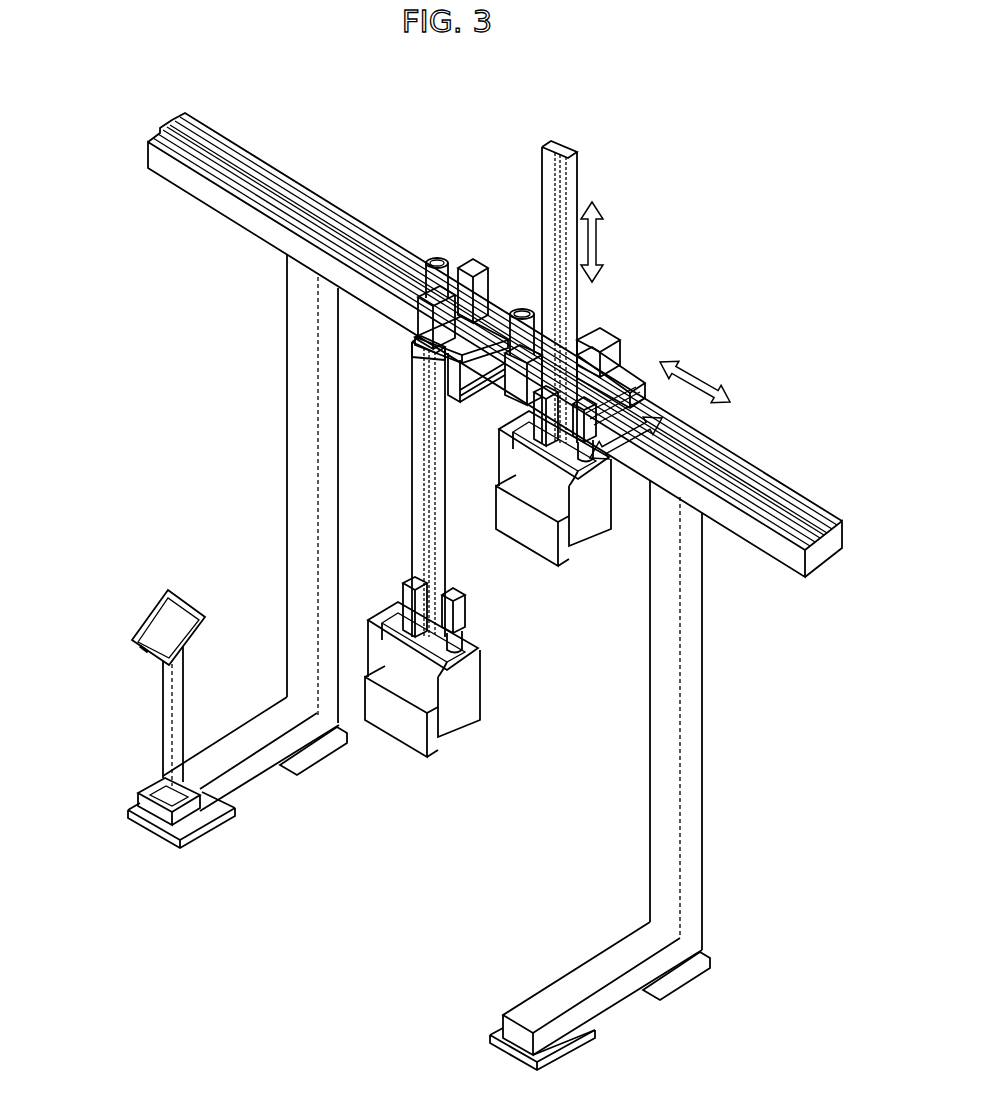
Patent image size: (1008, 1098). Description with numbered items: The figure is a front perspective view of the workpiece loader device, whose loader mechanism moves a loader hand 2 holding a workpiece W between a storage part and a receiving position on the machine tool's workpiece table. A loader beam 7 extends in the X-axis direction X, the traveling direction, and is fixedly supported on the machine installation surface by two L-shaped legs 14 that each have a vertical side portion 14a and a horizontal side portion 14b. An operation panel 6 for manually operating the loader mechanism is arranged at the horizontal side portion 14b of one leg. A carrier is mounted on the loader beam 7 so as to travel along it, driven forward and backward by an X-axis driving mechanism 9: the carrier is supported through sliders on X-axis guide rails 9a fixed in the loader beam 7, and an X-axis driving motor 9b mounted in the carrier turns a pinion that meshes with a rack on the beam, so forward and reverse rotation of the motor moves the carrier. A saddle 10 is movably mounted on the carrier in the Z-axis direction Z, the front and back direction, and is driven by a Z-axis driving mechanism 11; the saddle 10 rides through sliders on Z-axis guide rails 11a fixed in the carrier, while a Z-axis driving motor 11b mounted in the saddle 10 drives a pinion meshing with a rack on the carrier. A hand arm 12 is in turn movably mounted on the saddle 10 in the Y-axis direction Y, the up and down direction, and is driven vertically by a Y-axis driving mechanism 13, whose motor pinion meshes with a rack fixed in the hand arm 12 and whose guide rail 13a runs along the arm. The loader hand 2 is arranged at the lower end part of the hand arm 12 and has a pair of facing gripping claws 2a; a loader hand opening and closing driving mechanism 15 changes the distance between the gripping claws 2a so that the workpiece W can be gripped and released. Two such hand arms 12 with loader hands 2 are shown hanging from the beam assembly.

The loader hand 2 is at (474, 604).
The gripping claws 2a is at (367, 660).
The operation panel 6 is at (141, 604).
The loader beam 7 is at (495, 304).
The X-axis driving mechanism 9 is at (427, 233).
The X-axis guide rails 9a is at (290, 185).
The X-axis driving motor 9b is at (470, 265).
The saddle 10 is at (470, 345).
The Z-axis driving mechanism 11 is at (622, 296).
The Z-axis guide rails 11a is at (645, 398).
The Z-axis driving motor 11b is at (437, 257).
The hand arm 12 is at (515, 375).
The Y-axis driving mechanism 13 is at (416, 352).
The Y-axis guide rails 13a is at (578, 168).
The L-shaped legs 14 is at (419, 662).
The vertical side portions 14a is at (286, 448).
The horizontal side portions 14b is at (245, 720).
The loader hand opening and closing driving mechanism 15 is at (480, 616).
The workpiece W is at (395, 720).
The X-axis direction X is at (705, 378).
The Y-axis direction Y is at (602, 240).
The Z-axis direction Z is at (667, 427).